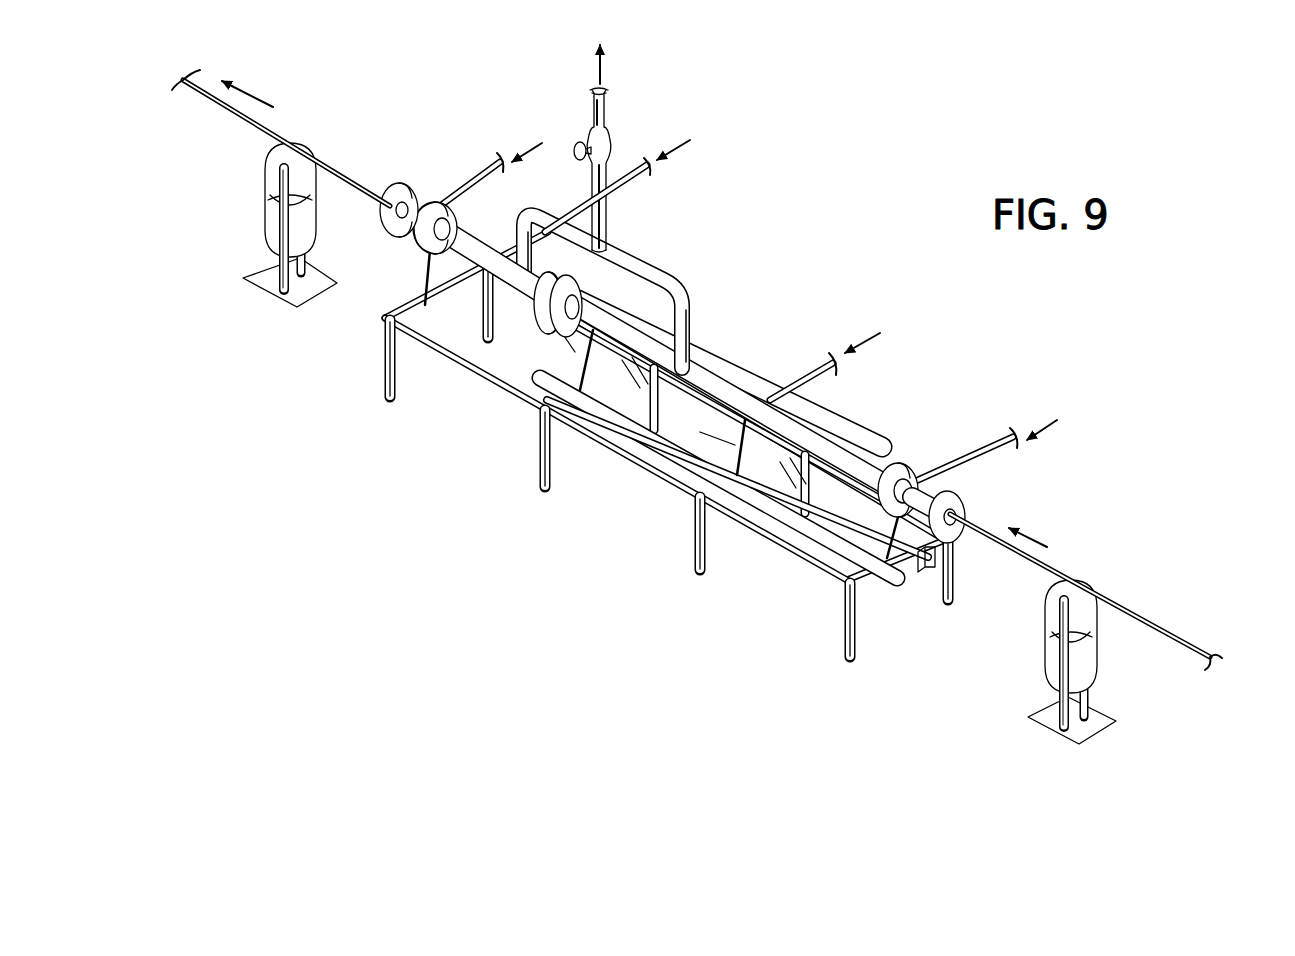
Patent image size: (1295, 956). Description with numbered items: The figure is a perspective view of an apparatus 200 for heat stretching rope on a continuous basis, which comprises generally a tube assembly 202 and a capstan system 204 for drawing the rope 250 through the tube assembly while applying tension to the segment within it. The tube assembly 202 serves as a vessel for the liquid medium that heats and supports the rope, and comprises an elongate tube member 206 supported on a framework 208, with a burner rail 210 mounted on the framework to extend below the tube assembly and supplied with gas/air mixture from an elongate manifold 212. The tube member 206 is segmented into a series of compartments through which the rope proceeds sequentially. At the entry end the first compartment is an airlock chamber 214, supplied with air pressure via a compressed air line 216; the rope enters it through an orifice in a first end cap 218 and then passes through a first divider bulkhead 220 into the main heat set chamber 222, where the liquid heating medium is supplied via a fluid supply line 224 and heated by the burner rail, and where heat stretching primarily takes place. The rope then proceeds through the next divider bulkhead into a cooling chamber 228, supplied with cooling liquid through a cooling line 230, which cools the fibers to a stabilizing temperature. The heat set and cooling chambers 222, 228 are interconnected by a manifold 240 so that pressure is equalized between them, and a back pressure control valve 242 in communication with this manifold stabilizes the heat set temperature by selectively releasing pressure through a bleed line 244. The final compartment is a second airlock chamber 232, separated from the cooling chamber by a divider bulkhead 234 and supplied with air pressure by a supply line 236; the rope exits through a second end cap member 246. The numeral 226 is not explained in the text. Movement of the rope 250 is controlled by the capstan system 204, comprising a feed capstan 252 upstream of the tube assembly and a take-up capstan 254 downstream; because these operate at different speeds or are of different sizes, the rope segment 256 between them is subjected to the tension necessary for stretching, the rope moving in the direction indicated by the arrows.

The apparatus 200 is at (784, 280).
The tube assembly 202 is at (552, 508).
The capstan system 204 is at (631, 443).
The tube member 206 is at (722, 386).
The framework 208 is at (542, 440).
The burner rail 210 is at (922, 567).
The manifold 212 is at (803, 528).
The airlock chamber 214 is at (919, 478).
The compressed air line 216 is at (1002, 460).
The first end cap 218 is at (965, 495).
The first divider bulkhead 220 is at (909, 475).
The heat set chamber 222 is at (797, 430).
The fluid supply line 224 is at (837, 382).
The collar 226 is at (532, 330).
The cooling chamber 228 is at (540, 326).
The cooling line 230 is at (625, 187).
The second airlock chamber 232 is at (400, 247).
The divider bulkhead 234 is at (437, 256).
The supply line 236 is at (464, 185).
The manifold 240 is at (649, 270).
The back pressure control valve 242 is at (608, 147).
The bleed line 244 is at (607, 107).
The second end cap member 246 is at (396, 185).
The rope 250 is at (215, 100).
The feed capstan 252 is at (1047, 666).
The take-up capstan 254 is at (259, 188).
The rope segment 256 is at (347, 165).